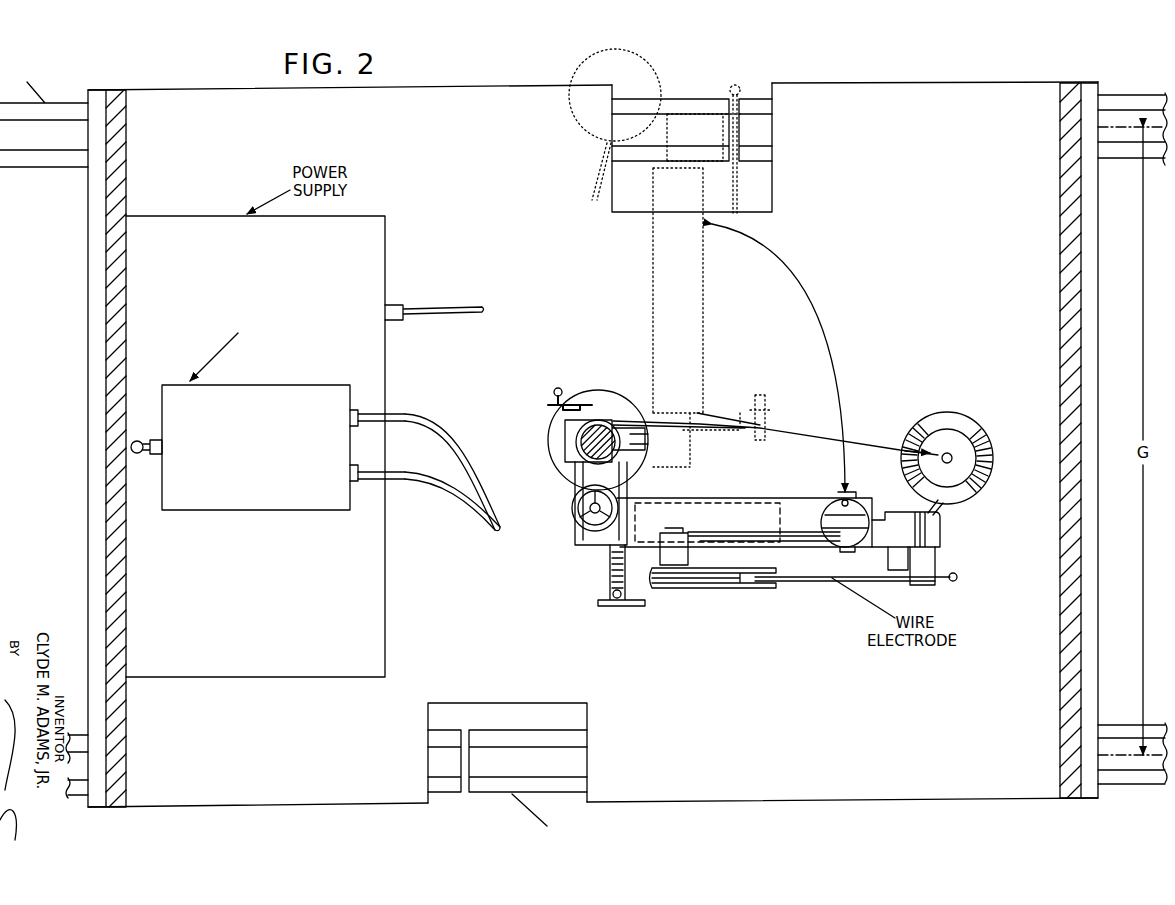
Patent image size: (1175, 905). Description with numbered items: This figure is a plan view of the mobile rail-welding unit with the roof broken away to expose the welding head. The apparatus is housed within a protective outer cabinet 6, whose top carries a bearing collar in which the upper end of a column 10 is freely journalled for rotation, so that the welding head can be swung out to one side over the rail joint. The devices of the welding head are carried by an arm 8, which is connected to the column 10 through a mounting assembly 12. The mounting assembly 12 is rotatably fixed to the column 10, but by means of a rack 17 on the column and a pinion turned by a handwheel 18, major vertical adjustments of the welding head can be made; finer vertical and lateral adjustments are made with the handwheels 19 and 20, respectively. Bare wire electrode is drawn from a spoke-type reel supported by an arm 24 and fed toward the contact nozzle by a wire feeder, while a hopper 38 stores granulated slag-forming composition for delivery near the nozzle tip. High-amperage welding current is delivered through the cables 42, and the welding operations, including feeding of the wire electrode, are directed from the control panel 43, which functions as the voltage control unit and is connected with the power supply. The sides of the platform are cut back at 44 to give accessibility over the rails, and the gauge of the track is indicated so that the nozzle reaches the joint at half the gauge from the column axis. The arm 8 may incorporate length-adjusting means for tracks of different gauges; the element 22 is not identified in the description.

The cabinet 6 is at (127, 164).
The arm 8 is at (704, 316).
The column 10 is at (600, 436).
The mounting assembly 12 is at (556, 441).
The rack 17 is at (583, 443).
The handwheel 18 is at (548, 405).
The handwheel 19 is at (572, 506).
The handwheel 20 is at (620, 608).
The guide tube 22 is at (760, 594).
The arm 24 is at (775, 541).
The hopper 38 is at (962, 421).
The cables 42 is at (440, 468).
The control panel 43 is at (232, 500).
The cut back 44 is at (640, 205).